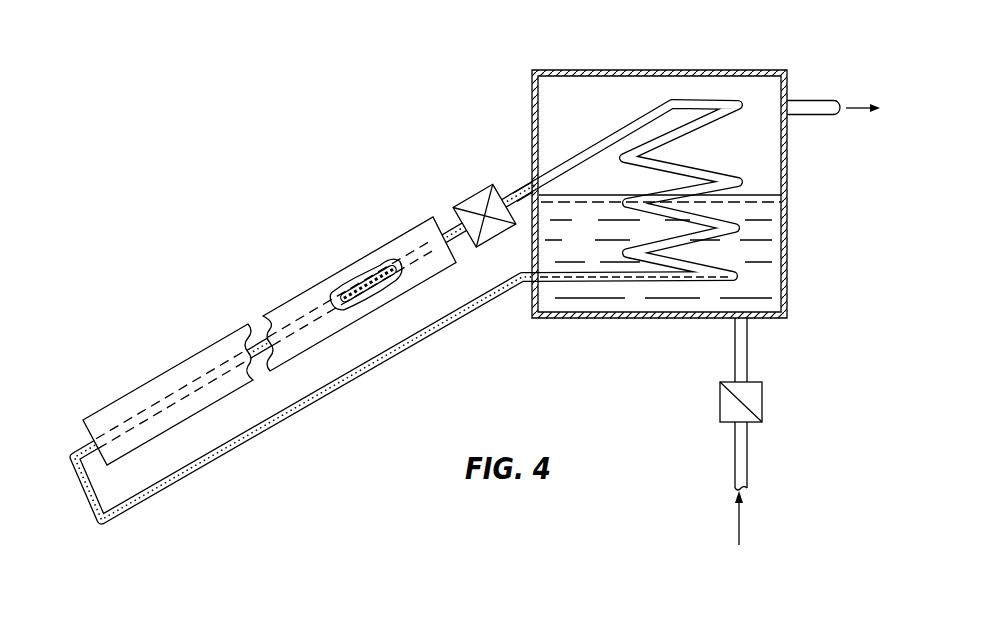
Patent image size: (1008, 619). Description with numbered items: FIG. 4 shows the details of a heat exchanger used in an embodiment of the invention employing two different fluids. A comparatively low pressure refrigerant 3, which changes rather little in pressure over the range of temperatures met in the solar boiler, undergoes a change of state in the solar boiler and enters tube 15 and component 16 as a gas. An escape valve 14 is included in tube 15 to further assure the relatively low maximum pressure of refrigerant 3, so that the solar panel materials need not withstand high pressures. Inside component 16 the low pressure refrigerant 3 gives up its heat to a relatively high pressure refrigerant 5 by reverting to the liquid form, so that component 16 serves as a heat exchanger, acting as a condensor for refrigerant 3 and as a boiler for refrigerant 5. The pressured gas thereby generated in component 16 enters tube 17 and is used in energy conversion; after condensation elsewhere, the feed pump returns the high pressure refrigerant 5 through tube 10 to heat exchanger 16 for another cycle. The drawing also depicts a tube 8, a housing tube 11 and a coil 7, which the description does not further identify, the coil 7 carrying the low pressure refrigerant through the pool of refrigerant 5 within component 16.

The low pressure refrigerant 3 is at (379, 285).
The high pressure refrigerant 5 is at (760, 250).
The coil 7 is at (703, 170).
The tube 8 is at (334, 395).
The tube 10 is at (741, 362).
The housing tube 11 is at (313, 280).
The escape valve 14 is at (491, 232).
The tube 15 is at (512, 196).
The component 16 is at (585, 114).
The tube 17 is at (806, 100).